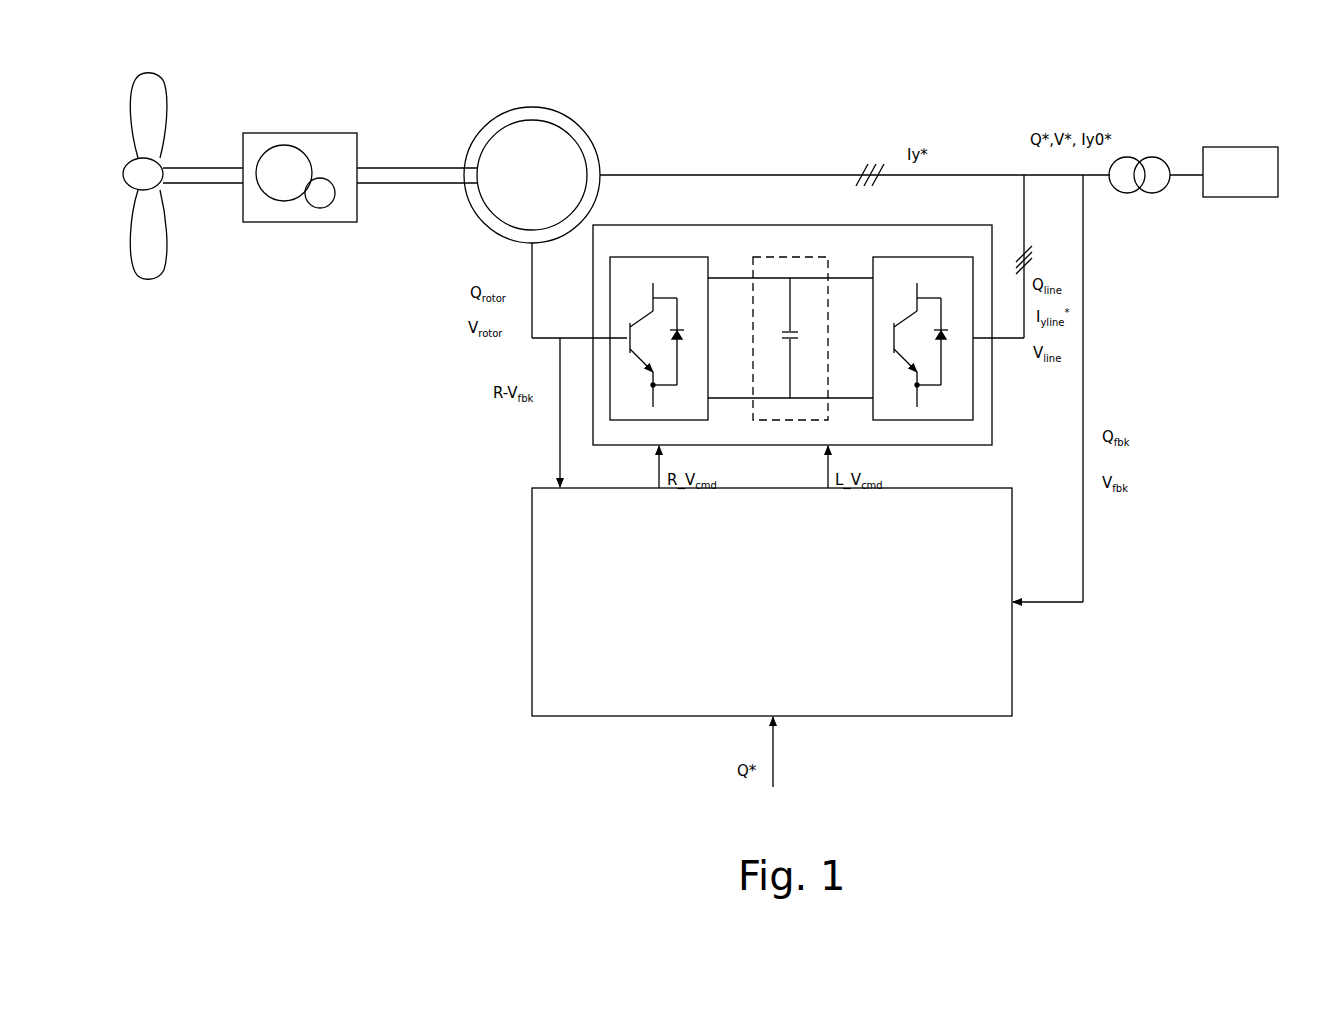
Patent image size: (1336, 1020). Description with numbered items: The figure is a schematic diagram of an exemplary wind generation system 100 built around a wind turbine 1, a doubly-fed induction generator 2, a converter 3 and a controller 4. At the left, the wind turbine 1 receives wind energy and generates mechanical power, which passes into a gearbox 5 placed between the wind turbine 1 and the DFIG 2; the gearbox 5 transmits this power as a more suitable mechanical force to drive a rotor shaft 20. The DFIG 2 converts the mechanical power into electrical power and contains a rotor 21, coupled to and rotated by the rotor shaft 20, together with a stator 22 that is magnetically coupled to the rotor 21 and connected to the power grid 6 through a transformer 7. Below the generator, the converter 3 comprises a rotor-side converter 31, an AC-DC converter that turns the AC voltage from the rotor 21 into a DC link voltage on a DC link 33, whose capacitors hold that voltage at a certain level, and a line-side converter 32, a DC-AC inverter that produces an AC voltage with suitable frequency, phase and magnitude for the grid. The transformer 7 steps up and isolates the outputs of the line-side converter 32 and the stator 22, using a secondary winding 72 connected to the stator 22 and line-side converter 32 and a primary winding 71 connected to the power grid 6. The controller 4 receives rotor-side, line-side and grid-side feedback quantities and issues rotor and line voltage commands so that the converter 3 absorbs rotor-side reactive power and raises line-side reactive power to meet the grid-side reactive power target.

The wind generation system 100 is at (921, 68).
The wind turbine 1 is at (165, 76).
The gearbox 5 is at (300, 133).
The rotor shaft 20 is at (432, 168).
The doubly-fed induction generator 2 is at (548, 168).
The stator 22 is at (580, 127).
The rotor 21 is at (502, 203).
The converter 3 is at (913, 225).
The rotor-side converter 31 is at (660, 256).
The DC link 33 is at (793, 256).
The line-side converter 32 is at (923, 256).
The controller 4 is at (932, 488).
The transformer 7 is at (1151, 174).
The secondary winding 72 is at (1122, 196).
The primary winding 71 is at (1160, 196).
The power grid 6 is at (1240, 146).